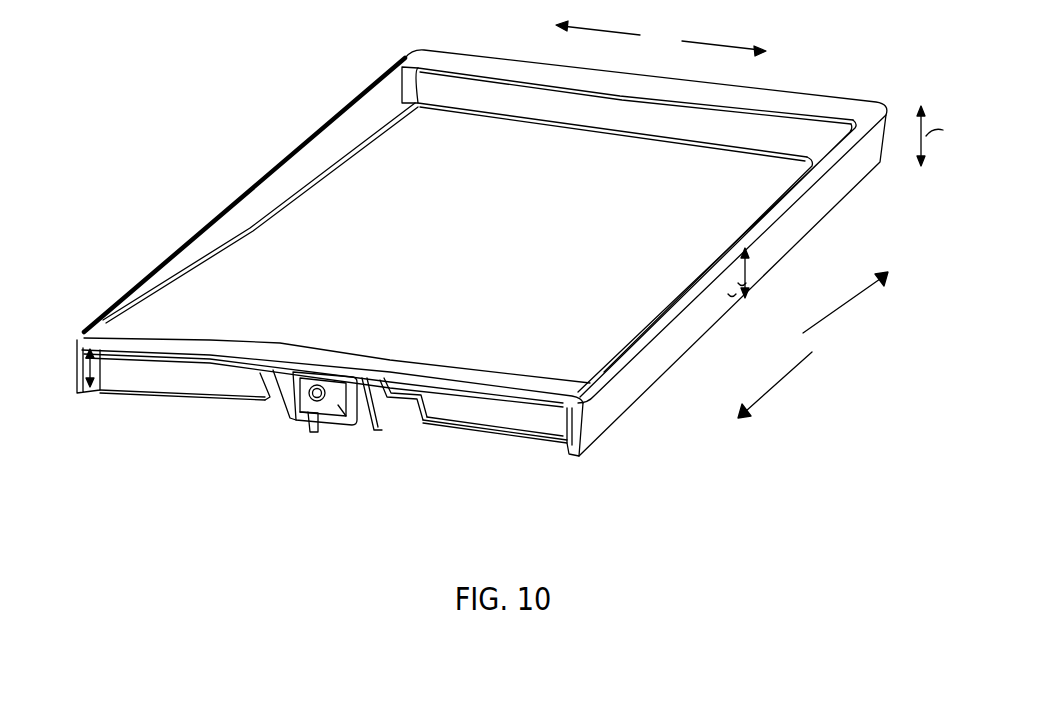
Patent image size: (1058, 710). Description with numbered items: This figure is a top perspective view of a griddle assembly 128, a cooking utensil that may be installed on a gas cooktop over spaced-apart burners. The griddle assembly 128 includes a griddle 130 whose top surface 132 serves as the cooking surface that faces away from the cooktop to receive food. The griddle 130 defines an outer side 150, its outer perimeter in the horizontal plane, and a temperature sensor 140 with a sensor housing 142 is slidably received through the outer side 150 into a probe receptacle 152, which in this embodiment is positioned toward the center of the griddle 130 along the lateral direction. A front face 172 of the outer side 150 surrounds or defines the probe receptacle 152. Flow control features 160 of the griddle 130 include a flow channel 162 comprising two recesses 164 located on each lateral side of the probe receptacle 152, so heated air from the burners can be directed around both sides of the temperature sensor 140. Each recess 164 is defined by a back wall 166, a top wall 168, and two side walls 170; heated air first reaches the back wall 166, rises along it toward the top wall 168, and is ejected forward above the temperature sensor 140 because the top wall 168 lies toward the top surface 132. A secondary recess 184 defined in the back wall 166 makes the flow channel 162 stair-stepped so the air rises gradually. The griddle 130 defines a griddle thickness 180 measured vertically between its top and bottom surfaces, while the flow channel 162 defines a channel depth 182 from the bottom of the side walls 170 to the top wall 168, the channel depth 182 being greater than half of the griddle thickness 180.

The griddle assembly 128 is at (195, 153).
The griddle 130 is at (511, 243).
The top surface 132 is at (377, 157).
The temperature sensor 140 is at (329, 427).
The sensor housing 142 is at (311, 401).
The outer side 150 is at (657, 361).
The probe receptacle 152 is at (351, 376).
The flow control features 160 is at (251, 357).
The flow channel 162 is at (495, 425).
The recess 164 is at (191, 380).
The back wall 166 is at (459, 411).
The top wall 168 is at (551, 390).
The side walls 170 is at (377, 427).
The front face 172 is at (357, 396).
The griddle thickness 180 is at (750, 272).
The channel depth 182 is at (89, 374).
The secondary recess 184 is at (271, 409).